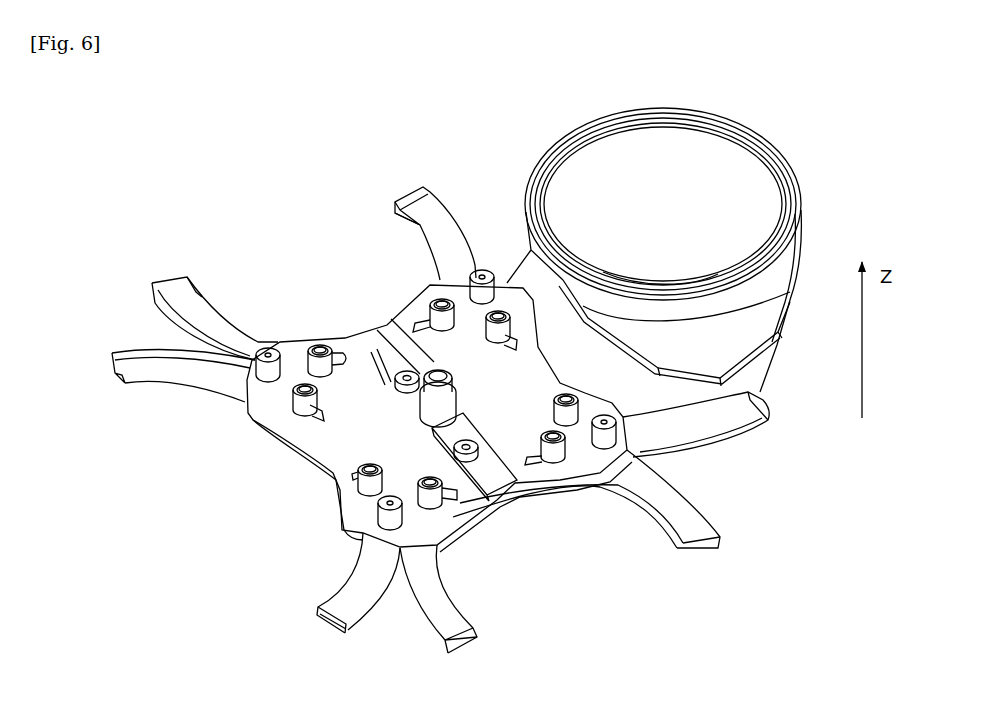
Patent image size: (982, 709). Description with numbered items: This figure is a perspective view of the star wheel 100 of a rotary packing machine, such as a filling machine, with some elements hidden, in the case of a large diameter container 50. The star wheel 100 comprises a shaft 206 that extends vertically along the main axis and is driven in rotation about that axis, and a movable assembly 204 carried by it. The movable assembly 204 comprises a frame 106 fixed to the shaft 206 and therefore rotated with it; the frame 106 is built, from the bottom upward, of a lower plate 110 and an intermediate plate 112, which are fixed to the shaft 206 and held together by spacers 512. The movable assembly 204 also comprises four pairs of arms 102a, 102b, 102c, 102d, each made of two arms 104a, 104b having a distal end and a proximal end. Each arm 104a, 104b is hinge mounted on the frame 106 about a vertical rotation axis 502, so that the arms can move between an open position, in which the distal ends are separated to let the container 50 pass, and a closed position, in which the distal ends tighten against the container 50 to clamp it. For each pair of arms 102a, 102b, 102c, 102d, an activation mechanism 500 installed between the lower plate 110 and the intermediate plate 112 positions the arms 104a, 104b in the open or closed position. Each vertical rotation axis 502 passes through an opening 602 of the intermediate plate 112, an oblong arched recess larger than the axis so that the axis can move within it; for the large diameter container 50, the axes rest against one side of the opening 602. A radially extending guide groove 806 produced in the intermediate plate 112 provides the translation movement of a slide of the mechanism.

The star wheel 100 is at (700, 250).
The large diameter container 50 is at (651, 212).
The pair of arms 102a is at (420, 615).
The pair of arms 102b is at (653, 483).
The pair of arms 102c is at (277, 238).
The pair of arms 102d is at (155, 346).
The arm 104a is at (463, 632).
The arm 104b is at (706, 548).
The frame 106 is at (118, 318).
The movable assembly 204 is at (172, 252).
The shaft 206 is at (440, 373).
The activation mechanism 500 is at (341, 403).
The vertical rotation axis 502 is at (291, 347).
The opening 602 is at (338, 352).
The intermediate plate 112 is at (285, 413).
The lower plate 110 is at (343, 527).
The spacer 512 is at (362, 543).
The guide groove 806 is at (500, 458).